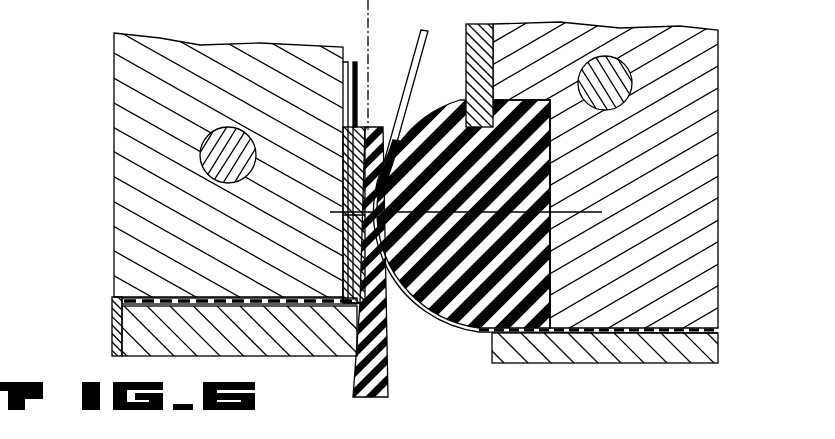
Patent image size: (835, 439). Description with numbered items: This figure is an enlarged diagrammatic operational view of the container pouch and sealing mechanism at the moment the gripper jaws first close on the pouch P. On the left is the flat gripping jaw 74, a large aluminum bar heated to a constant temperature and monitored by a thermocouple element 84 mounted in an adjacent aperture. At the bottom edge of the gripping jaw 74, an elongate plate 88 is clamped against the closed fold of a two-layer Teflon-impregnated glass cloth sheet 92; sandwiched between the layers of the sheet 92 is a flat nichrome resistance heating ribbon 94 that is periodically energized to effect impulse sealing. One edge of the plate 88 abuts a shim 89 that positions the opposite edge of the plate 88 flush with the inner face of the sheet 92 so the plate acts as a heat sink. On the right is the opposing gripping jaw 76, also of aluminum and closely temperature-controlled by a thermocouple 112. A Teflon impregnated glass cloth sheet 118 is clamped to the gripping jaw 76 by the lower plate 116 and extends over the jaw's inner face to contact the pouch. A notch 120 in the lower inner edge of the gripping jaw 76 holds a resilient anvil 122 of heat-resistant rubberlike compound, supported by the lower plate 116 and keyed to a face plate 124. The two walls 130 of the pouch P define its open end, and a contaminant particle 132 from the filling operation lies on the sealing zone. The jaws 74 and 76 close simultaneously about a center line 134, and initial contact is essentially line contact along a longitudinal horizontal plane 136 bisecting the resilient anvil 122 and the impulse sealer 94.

The gripping jaw 74 is at (122, 186).
The gripping jaw 76 is at (708, 105).
The thermocouple element 84 is at (205, 155).
The elongate plate 88 is at (128, 332).
The shim 89 is at (112, 312).
The Teflon-impregnated glass cloth sheet 92 is at (345, 88).
The resistance heating ribbon 94 is at (356, 262).
The thermocouple 112 is at (627, 85).
The lower plate 116 is at (715, 341).
The Teflon impregnated glass cloth sheet 118 is at (448, 331).
The notch 120 is at (553, 186).
The resilient anvil 122 is at (552, 162).
The face plate 124 is at (478, 32).
The walls 130 is at (370, 163).
The contaminant particle 132 is at (352, 226).
The center line 134 is at (368, 13).
The longitudinal horizontal plane 136 is at (565, 217).
The pouch P is at (387, 390).